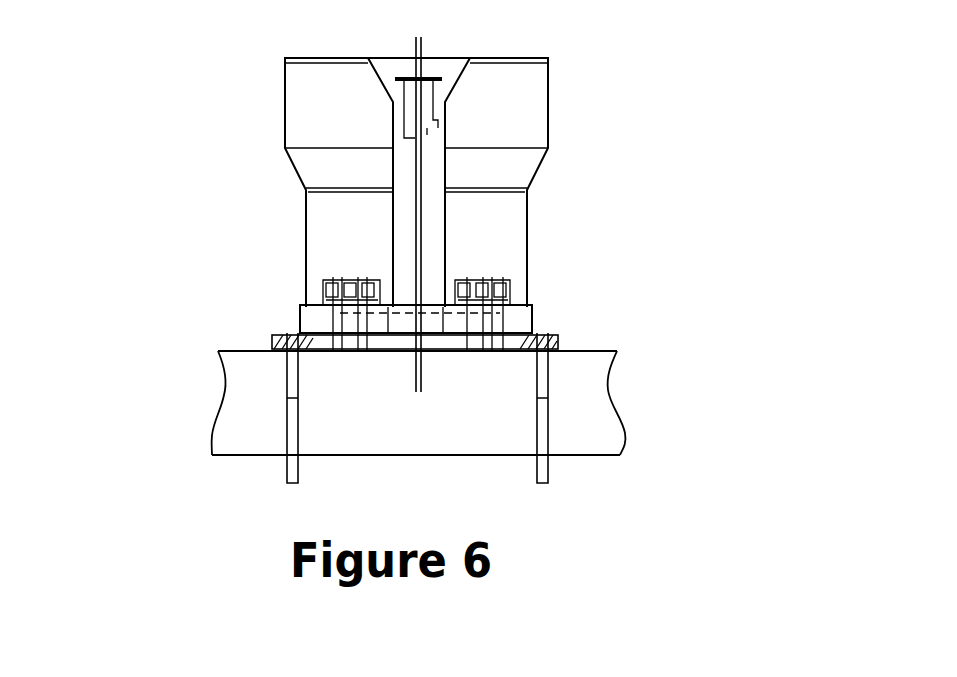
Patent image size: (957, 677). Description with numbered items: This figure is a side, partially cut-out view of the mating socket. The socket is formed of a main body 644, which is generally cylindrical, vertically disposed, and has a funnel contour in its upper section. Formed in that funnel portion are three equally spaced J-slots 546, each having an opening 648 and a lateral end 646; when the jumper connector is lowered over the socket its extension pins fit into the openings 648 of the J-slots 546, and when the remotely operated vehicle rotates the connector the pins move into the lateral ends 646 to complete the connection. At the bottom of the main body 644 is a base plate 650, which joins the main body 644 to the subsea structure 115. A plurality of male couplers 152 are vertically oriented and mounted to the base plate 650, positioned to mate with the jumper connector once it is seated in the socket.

The main body 644 is at (528, 120).
The openings 648 is at (413, 78).
The lateral ends 646 is at (432, 122).
The J-slots 546 is at (435, 65).
The male couplers 152 is at (325, 307).
The base plate 650 is at (275, 335).
The subsea structure 115 is at (640, 389).